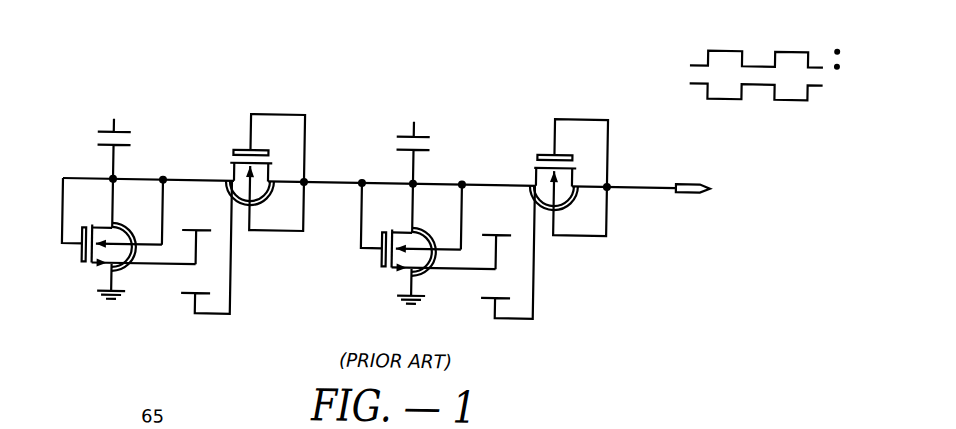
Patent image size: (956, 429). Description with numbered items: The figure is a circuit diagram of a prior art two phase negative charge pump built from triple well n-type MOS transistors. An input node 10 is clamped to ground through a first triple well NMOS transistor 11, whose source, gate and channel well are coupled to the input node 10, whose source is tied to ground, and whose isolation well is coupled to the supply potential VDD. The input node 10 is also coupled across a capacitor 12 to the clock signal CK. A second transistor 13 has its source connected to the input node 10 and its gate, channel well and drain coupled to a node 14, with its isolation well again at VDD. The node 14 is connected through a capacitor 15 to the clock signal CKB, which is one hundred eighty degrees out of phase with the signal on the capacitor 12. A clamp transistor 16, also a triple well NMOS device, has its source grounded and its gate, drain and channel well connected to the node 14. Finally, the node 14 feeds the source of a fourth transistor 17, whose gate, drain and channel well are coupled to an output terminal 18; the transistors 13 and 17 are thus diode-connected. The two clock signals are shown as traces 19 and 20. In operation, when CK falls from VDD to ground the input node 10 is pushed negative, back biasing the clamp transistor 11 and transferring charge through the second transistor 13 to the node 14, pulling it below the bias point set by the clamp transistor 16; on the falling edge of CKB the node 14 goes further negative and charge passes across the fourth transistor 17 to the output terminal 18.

The input node 10 is at (193, 84).
The first triple well n-channel MOS transistor 11 is at (141, 245).
The capacitor 12 is at (92, 132).
The second transistor 13 is at (267, 157).
The node 14 is at (363, 176).
The capacitor 15 is at (444, 136).
The clamp transistor 16 is at (447, 249).
The fourth transistor 17 is at (564, 162).
The output terminal 18 is at (673, 176).
The clock signal trace 19 is at (724, 40).
The clock signal trace 20 is at (721, 88).